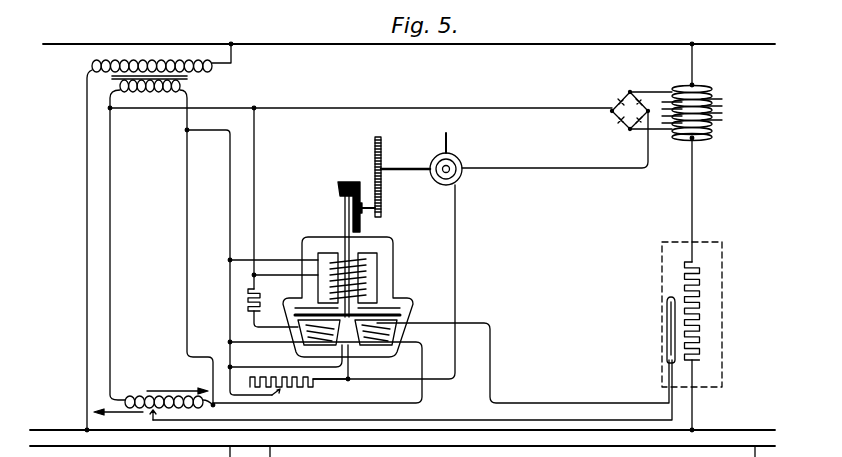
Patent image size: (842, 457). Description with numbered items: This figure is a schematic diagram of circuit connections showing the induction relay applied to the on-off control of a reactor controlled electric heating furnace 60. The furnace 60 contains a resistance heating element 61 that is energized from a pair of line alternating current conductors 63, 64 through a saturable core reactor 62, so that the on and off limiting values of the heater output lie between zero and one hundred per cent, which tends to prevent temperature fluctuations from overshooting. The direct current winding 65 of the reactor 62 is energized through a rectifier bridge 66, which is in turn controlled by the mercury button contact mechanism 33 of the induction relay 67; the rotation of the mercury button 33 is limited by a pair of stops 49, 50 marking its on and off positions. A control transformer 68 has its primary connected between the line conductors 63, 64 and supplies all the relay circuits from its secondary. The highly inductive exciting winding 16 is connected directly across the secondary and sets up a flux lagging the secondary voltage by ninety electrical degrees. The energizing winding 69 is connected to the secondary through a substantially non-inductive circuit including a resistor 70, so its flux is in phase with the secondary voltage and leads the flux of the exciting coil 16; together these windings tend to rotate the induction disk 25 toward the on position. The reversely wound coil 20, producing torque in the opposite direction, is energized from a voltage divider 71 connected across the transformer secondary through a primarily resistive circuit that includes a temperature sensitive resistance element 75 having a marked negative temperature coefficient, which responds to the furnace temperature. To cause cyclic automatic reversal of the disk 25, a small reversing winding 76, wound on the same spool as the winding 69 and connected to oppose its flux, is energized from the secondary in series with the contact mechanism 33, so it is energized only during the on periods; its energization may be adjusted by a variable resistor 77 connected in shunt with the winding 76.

The line alternating current conductor 63 is at (64, 44).
The line alternating current conductor 64 is at (36, 430).
The control transformer 68 is at (190, 78).
The mercury button contact mechanism 33 is at (444, 185).
The stop 49 is at (430, 144).
The stop 50 is at (466, 147).
The induction relay 67 is at (418, 260).
The exciting winding 16 is at (363, 287).
The induction disk 25 is at (392, 313).
The reversing winding 76 is at (298, 324).
The energizing winding 69 is at (313, 346).
The coil 20 is at (370, 335).
The resistor 70 is at (262, 292).
The variable resistor 77 is at (316, 387).
The voltage divider 71 is at (133, 396).
The rectifier bridge 66 is at (616, 114).
The direct current winding 65 is at (718, 101).
The saturable core reactor 62 is at (694, 140).
The electric heating furnace 60 is at (722, 270).
The resistance heating element 61 is at (697, 348).
The temperature sensitive resistance varying element 75 is at (666, 318).